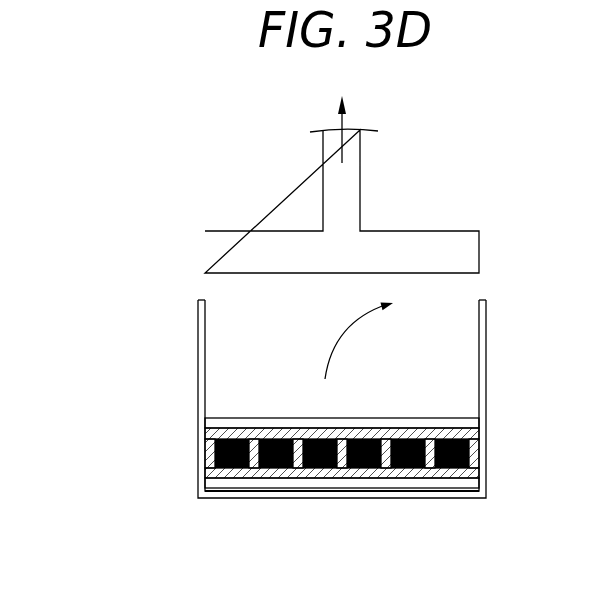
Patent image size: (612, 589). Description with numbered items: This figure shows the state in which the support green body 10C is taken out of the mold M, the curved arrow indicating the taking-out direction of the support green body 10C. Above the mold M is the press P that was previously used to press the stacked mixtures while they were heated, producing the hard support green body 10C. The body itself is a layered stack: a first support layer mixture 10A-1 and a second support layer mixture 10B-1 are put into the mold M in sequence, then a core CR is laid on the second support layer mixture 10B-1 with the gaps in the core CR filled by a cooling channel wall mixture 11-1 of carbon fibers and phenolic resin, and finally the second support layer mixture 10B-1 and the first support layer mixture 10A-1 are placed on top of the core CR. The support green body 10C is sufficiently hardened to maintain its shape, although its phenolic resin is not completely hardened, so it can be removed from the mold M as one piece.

The press P is at (249, 242).
The mold M is at (198, 349).
The support green body 10C is at (258, 472).
The first support layer mixture 10A-1 is at (205, 420).
The second support layer mixture 10B-1 is at (205, 436).
The cooling channel wall mixture 11-1 is at (342, 458).
The core CR is at (457, 470).